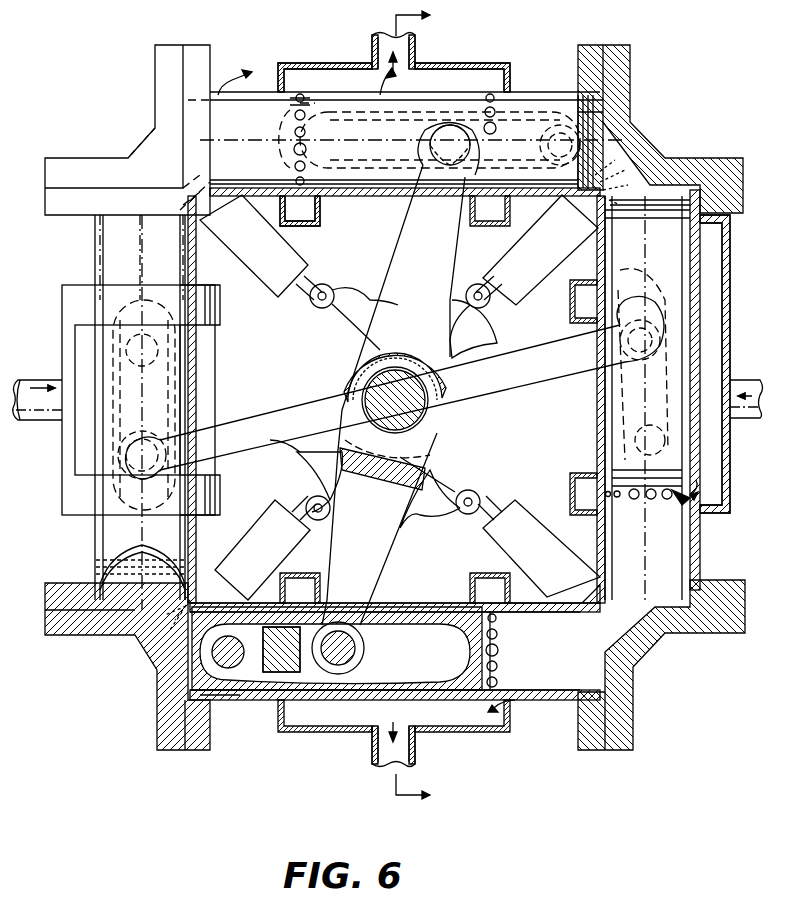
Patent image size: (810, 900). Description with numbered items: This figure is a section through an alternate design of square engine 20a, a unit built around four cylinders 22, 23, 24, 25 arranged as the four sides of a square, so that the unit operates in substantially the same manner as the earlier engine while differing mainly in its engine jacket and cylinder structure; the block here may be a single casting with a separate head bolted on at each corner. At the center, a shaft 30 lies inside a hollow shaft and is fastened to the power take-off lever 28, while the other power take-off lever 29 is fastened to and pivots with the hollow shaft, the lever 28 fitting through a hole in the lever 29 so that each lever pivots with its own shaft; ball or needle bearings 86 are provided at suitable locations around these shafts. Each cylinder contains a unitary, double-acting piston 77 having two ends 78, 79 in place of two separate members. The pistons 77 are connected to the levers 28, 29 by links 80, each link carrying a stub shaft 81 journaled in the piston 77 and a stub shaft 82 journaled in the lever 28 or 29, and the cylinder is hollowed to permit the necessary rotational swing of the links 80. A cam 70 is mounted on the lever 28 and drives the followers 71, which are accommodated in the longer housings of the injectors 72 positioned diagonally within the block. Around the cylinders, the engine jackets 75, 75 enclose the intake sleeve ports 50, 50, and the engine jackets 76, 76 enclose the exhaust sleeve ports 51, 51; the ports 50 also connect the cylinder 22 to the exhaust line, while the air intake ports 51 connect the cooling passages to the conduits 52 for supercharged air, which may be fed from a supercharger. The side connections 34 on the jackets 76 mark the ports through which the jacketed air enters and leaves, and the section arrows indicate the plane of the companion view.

The square engine 20a is at (650, 70).
The cylinder 22 is at (518, 100).
The cylinder 23 is at (702, 244).
The cylinder 24 is at (532, 690).
The cylinder 25 is at (188, 268).
The power take-off lever 28 is at (434, 271).
The power take-off lever 29 is at (508, 392).
The shaft 30 is at (425, 404).
The fluid port 34 is at (418, 40).
The intake sleeve ports 50 is at (640, 494).
The air intake ports 51 is at (296, 120).
The conduits 52 is at (48, 420).
The cam 70 is at (476, 343).
The followers 71 is at (336, 290).
The injectors 72 is at (278, 273).
The engine jacket 75 is at (62, 318).
The engine jacket 76 is at (452, 80).
The piston 77 is at (640, 322).
The piston end 78 is at (590, 112).
The piston end 79 is at (644, 432).
The link 80 is at (270, 670).
The stub shaft 81 is at (236, 640).
The stub shaft 82 is at (350, 634).
The bearings 86 is at (446, 375).